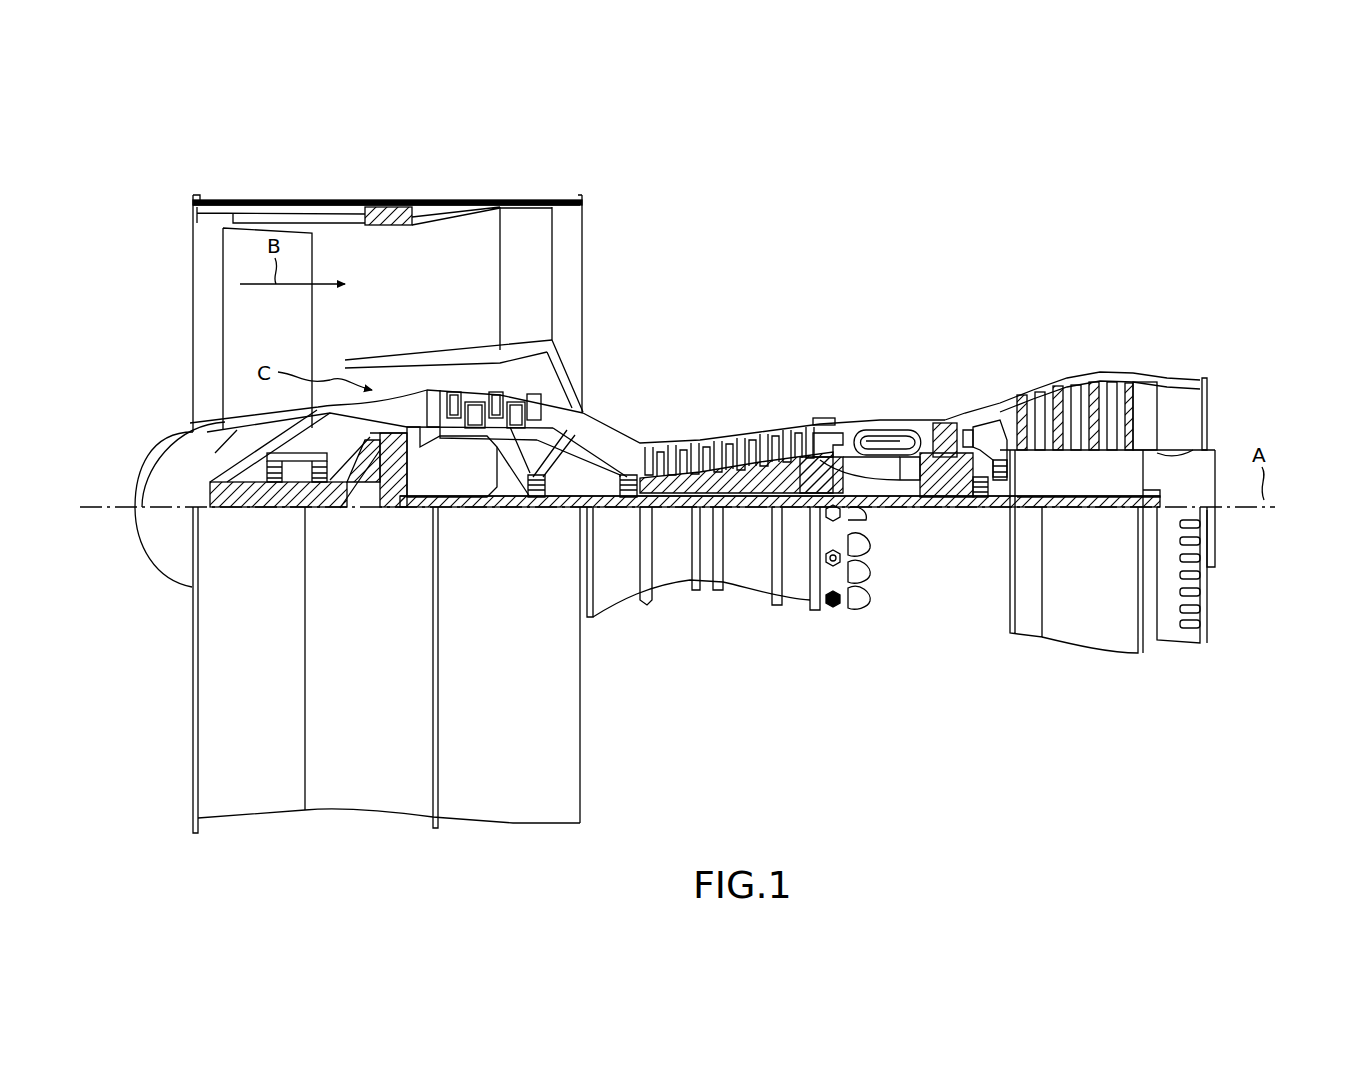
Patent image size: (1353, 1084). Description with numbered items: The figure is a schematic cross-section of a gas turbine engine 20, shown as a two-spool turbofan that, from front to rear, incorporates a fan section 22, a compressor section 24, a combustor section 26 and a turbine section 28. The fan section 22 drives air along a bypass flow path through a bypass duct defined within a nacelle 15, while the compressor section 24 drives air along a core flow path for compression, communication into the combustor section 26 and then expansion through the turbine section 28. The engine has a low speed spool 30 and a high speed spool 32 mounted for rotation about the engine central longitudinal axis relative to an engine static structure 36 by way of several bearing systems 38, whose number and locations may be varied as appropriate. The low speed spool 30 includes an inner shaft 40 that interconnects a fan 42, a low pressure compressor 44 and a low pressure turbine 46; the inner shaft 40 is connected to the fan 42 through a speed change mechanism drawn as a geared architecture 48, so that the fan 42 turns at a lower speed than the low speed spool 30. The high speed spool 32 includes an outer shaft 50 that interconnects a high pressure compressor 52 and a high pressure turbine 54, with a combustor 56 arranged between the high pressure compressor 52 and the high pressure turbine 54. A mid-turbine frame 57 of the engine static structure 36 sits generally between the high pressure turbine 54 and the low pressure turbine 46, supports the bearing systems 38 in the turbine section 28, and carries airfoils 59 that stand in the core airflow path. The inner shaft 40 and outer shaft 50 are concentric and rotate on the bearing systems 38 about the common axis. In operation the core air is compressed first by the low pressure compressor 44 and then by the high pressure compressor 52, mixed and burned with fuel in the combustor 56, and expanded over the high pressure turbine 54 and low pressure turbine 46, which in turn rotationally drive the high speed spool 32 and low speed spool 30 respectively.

The nacelle 15 is at (386, 213).
The gas turbine engine 20 is at (905, 212).
The fan section 22 is at (300, 185).
The compressor section 24 is at (632, 392).
The combustor section 26 is at (870, 385).
The turbine section 28 is at (1030, 350).
The low speed spool 30 is at (745, 548).
The high speed spool 32 is at (797, 462).
The engine static structure 36 is at (798, 580).
The bearing systems 38 is at (538, 505).
The inner shaft 40 is at (603, 510).
The fan 42 is at (278, 322).
The low pressure compressor 44 is at (552, 400).
The low pressure turbine 46 is at (1083, 395).
The geared architecture 48 is at (395, 497).
The outer shaft 50 is at (862, 500).
The high pressure compressor 52 is at (745, 438).
The high pressure turbine 54 is at (938, 425).
The combustor 56 is at (888, 443).
The mid-turbine frame 57 is at (992, 415).
The airfoils 59 is at (995, 440).